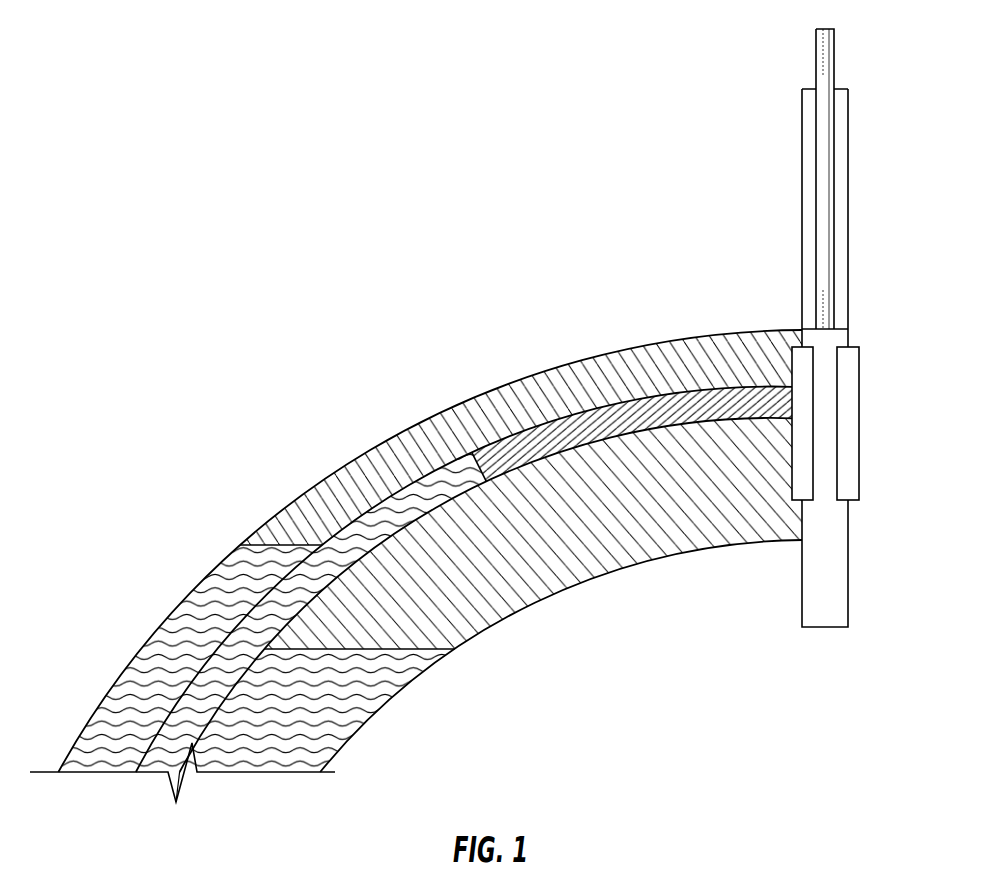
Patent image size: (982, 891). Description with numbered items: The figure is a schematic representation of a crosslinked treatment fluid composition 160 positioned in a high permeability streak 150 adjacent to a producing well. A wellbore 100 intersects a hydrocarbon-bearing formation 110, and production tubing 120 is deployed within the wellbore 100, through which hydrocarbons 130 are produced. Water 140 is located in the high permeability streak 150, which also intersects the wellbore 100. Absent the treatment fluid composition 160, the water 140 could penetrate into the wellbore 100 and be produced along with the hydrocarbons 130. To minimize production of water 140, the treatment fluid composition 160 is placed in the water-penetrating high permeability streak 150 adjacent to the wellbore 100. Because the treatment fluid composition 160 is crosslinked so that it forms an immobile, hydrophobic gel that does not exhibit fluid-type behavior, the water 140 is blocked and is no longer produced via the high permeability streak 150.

The wellbore 100 is at (861, 138).
The hydrocarbon-bearing formation 110 is at (259, 172).
The production tubing 120 is at (833, 263).
The hydrocarbons 130 is at (665, 557).
The water 140 is at (205, 677).
The high permeability streak 150 is at (350, 540).
The treatment fluid composition 160 is at (612, 406).